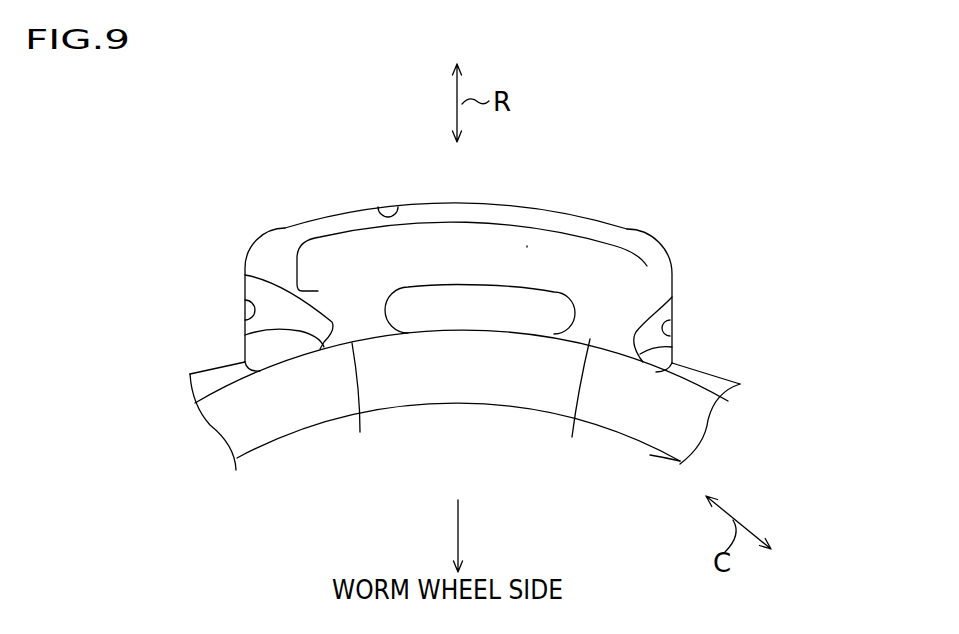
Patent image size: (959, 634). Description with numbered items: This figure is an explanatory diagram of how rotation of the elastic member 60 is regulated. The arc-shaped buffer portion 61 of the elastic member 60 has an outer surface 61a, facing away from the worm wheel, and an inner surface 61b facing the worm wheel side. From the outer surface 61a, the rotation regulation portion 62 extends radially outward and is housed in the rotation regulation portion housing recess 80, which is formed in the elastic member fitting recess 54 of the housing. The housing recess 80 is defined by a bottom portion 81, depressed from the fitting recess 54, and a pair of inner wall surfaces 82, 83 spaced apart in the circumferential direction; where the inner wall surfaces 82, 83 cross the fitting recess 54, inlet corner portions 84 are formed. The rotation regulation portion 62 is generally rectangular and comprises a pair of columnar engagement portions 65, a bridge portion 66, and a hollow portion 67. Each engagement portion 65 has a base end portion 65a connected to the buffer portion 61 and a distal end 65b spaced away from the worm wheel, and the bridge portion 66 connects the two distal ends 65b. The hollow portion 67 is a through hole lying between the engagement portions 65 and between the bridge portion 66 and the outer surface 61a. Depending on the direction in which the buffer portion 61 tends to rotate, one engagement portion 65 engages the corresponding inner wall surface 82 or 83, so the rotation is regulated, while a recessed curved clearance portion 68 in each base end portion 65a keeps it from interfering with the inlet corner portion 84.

The elastic member fitting recess 54 is at (230, 377).
The elastic member 60 is at (691, 430).
The buffer portion 61 is at (453, 395).
The outer surface 61a is at (513, 333).
The inner surface 61b is at (661, 448).
The rotation regulation portion 62 is at (482, 213).
The engagement portion 65 is at (245, 275).
The base end portion 65a is at (460, 403).
The distal end 65b is at (313, 270).
The bridge portion 66 is at (527, 246).
The hollow portion 67 is at (450, 307).
The clearance portion 68 is at (245, 335).
The rotation regulation portion housing recess 80 is at (273, 251).
The bottom portion 81 is at (380, 206).
The inner wall surface 82 is at (243, 312).
The inner wall surface 83 is at (675, 332).
The inlet corner portion 84 is at (260, 371).